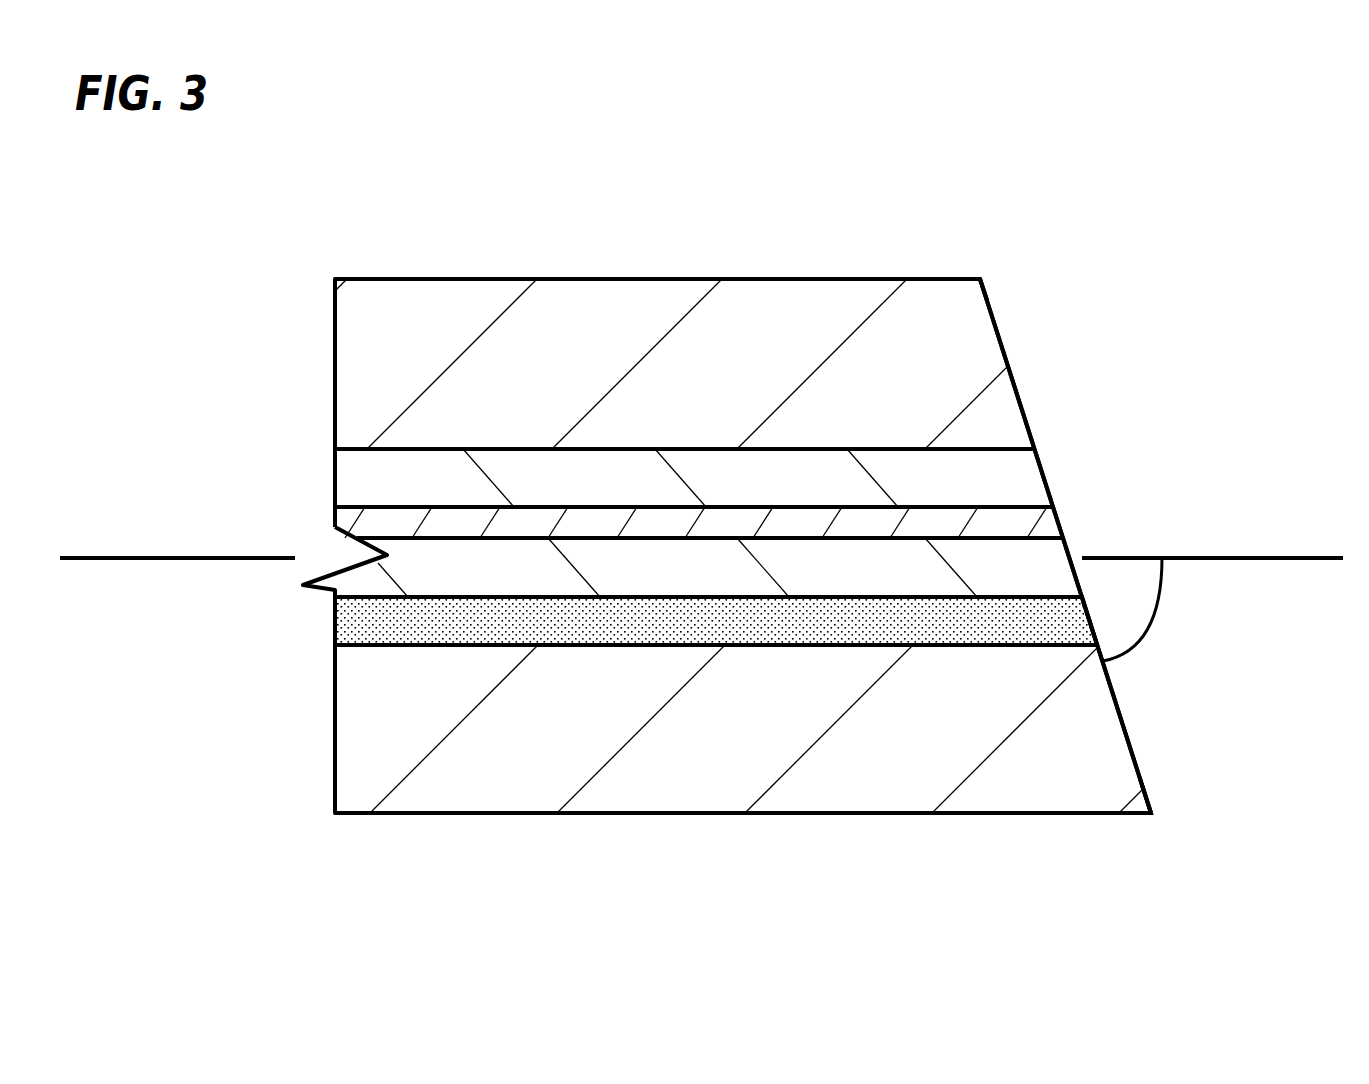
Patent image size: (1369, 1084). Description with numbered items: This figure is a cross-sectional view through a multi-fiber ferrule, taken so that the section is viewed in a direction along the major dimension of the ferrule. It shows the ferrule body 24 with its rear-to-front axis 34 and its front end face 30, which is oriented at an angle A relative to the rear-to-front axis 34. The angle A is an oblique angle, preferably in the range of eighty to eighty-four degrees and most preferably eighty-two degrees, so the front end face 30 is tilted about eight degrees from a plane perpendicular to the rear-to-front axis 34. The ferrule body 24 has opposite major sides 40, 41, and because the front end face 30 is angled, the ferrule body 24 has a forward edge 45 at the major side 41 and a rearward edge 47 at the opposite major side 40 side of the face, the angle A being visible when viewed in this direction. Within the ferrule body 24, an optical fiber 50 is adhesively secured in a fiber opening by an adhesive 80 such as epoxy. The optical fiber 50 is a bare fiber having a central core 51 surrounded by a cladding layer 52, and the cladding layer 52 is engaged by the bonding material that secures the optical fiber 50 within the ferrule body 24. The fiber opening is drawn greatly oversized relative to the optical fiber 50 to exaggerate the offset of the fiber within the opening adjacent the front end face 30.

The ferrule body 24 is at (667, 279).
The major side 40 is at (816, 279).
The rearward edge 47 is at (980, 279).
The front end face 30 is at (1005, 365).
The optical fibers 50 is at (1045, 478).
The cladding layer 52 is at (622, 455).
The central core 51 is at (730, 510).
The rear-to-front axis 34 is at (175, 556).
The adhesive 80 is at (370, 630).
The forward edge 45 is at (1151, 813).
The major side 41 is at (802, 813).
The angle A is at (1140, 609).